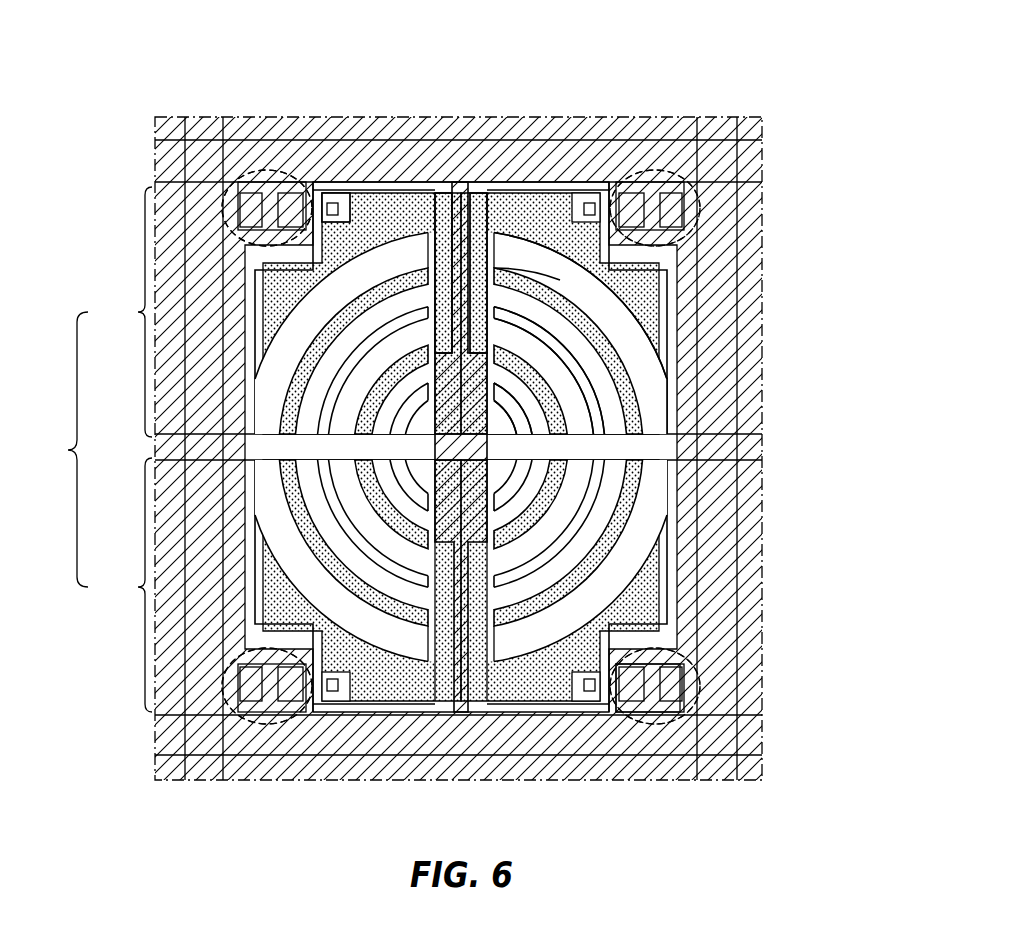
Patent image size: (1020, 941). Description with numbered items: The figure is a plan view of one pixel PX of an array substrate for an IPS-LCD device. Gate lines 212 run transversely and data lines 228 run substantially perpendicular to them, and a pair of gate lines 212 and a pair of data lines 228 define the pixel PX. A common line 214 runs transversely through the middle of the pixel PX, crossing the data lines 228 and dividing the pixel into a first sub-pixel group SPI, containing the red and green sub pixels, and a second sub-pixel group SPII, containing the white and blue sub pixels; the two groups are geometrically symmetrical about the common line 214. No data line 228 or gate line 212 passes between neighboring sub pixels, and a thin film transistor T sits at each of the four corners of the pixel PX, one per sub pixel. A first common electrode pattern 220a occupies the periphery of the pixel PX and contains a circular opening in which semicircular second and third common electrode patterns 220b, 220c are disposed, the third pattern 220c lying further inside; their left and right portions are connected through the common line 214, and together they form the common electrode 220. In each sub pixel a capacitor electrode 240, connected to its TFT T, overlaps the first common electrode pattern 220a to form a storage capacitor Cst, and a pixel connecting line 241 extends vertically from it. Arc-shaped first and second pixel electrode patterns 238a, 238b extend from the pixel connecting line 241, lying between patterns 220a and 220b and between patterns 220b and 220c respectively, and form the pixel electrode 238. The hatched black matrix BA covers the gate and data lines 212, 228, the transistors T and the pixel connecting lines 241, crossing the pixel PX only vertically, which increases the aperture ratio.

The gate line 212 is at (762, 140).
The common line 214 is at (762, 434).
The common electrode 220 is at (840, 317).
The first common electrode pattern 220a is at (668, 312).
The second common electrode pattern 220b is at (846, 362).
The third common electrode pattern 220c is at (548, 437).
The data line 228 is at (223, 782).
The pixel electrode 238 is at (572, 48).
The first pixel electrode pattern 238a is at (423, 330).
The second pixel electrode pattern 238b is at (572, 300).
The capacitor electrode 240 is at (452, 346).
The pixel connecting line 241 is at (535, 250).
The thin film transistor T is at (263, 170).
The black matrix BA is at (334, 192).
The storage capacitor Cst is at (670, 580).
The first sub-pixel group SPI is at (125, 312).
The second sub-pixel group SPII is at (122, 585).
The pixel PX is at (62, 449).